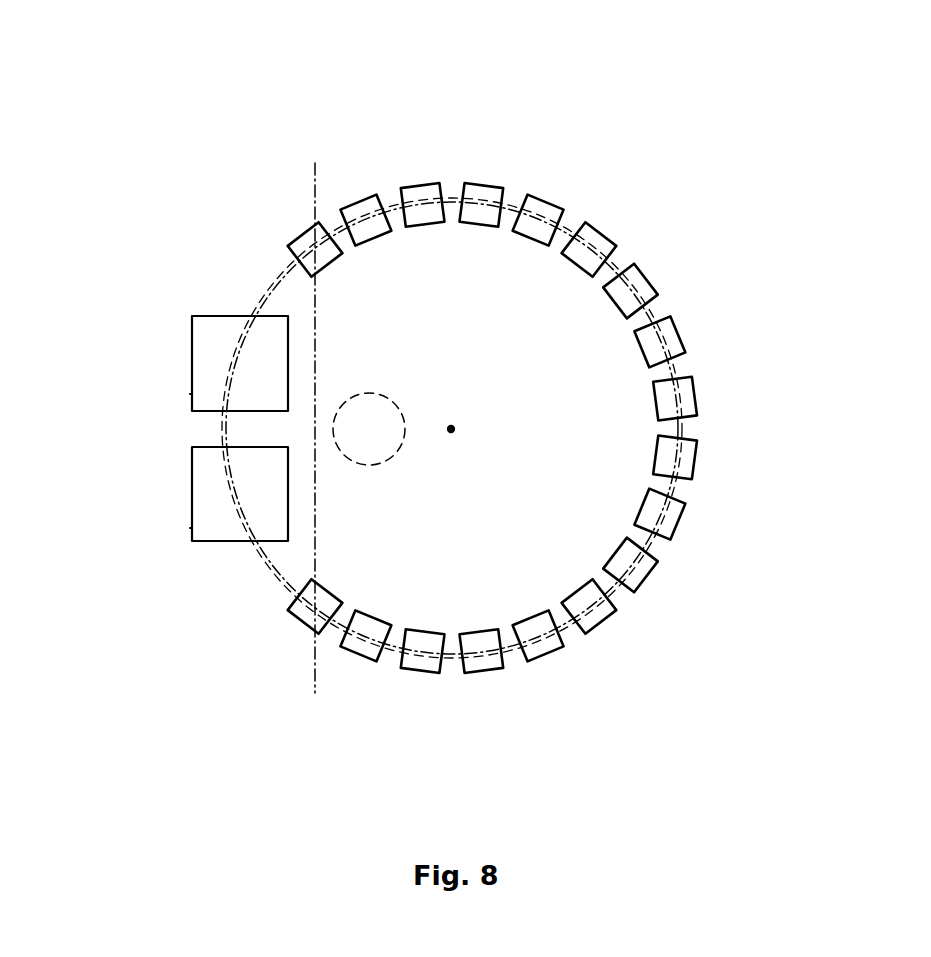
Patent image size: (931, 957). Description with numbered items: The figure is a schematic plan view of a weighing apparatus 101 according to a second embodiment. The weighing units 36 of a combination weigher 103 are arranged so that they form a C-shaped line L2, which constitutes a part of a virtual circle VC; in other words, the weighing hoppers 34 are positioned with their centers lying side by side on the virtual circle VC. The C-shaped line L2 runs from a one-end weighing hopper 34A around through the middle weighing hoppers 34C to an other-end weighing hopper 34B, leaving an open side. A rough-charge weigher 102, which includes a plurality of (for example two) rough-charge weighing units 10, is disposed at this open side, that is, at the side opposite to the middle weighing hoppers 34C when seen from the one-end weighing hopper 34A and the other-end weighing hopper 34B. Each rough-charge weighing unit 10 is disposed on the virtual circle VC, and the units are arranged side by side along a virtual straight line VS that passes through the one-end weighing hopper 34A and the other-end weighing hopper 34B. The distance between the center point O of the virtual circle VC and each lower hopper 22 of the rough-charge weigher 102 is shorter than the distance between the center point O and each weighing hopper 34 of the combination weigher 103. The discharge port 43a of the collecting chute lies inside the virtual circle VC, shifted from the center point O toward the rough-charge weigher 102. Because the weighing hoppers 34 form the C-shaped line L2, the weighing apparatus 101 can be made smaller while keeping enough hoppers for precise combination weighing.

The weighing apparatus 101 is at (641, 127).
The rough-charge weigher 102 is at (138, 315).
The combination weigher 103 is at (698, 227).
The lower hopper 22 is at (192, 340).
The rough-charge weighing unit 10 is at (190, 394).
The weighing hopper 34 is at (653, 568).
The one-end weighing hopper 34A is at (322, 238).
The other-end weighing hopper 34B is at (318, 622).
The middle weighing hopper 34C is at (679, 333).
The weighing unit 36 is at (683, 512).
The discharge port 43a is at (372, 466).
The center point O is at (451, 428).
The virtual circle VC is at (265, 293).
The virtual straight line VS is at (315, 183).
The C-shaped line L2 is at (660, 308).